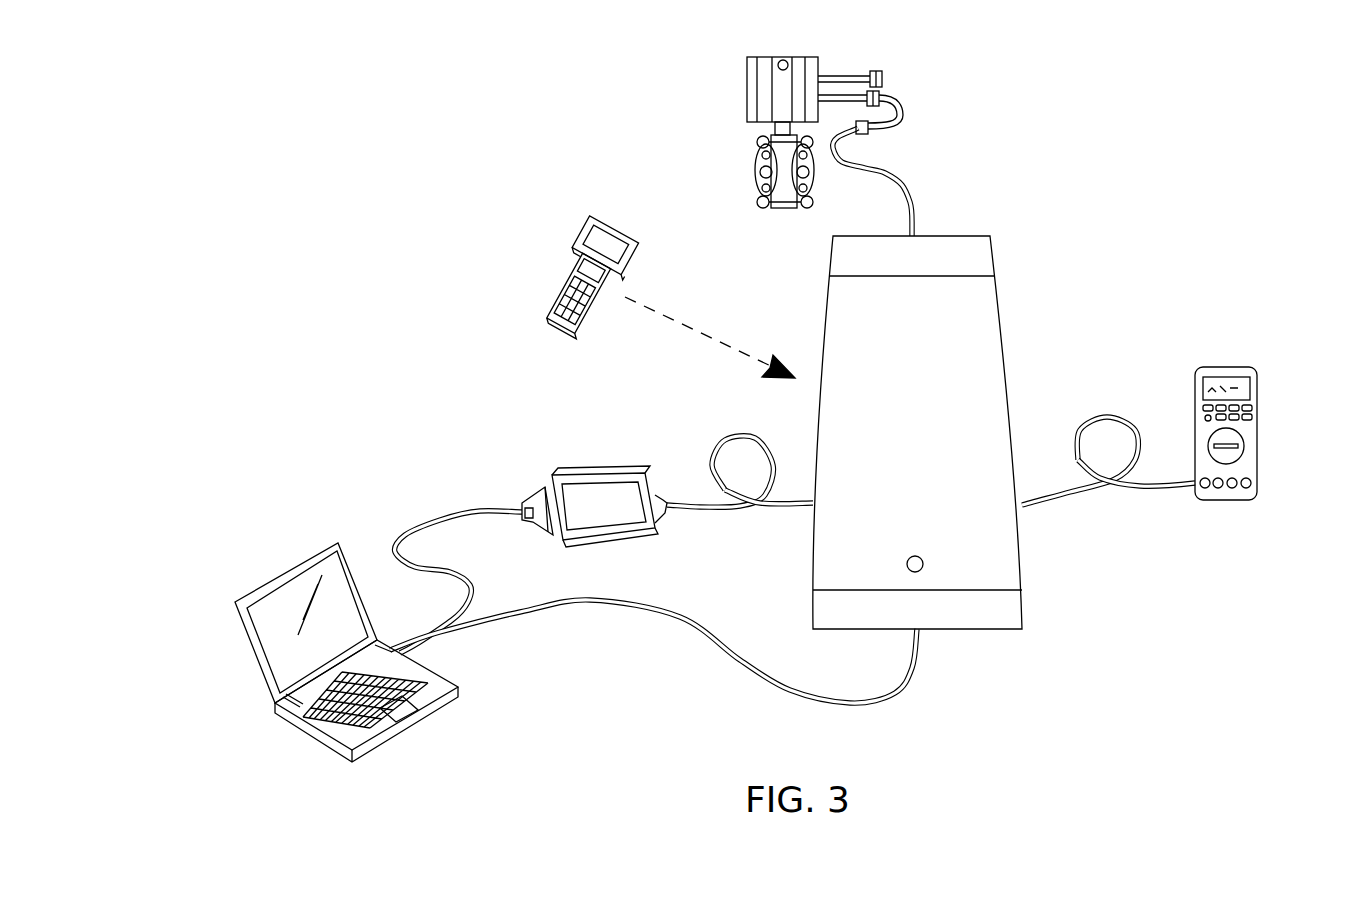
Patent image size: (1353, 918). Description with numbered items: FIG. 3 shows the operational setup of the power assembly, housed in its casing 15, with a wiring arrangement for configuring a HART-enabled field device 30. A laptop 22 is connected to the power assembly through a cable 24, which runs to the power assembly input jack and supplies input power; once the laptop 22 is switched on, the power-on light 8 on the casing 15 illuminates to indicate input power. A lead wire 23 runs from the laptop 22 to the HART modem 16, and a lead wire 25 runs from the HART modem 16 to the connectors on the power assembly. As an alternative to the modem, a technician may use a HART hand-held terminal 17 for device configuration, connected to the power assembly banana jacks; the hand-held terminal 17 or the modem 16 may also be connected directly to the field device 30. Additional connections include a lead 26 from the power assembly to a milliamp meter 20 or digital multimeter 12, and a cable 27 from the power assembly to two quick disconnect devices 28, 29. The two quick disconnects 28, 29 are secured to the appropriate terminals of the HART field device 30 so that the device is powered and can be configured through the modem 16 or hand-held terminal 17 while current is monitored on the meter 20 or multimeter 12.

The power-on light 8 is at (923, 568).
The digital multimeter 12 is at (1263, 400).
The milliamp meter 20 is at (1227, 367).
The casing 15 is at (1001, 325).
The HART modem 16 is at (590, 473).
The HART hand-held terminal 17 is at (577, 243).
The laptop 22 is at (313, 557).
The lead wire 23 is at (452, 520).
The cable 24 is at (597, 603).
The lead wire 25 is at (728, 438).
The lead 26 is at (1092, 420).
The cable 27 is at (912, 190).
The quick disconnect 28 is at (879, 64).
The quick disconnect 29 is at (880, 95).
The HART field device 30 is at (747, 90).